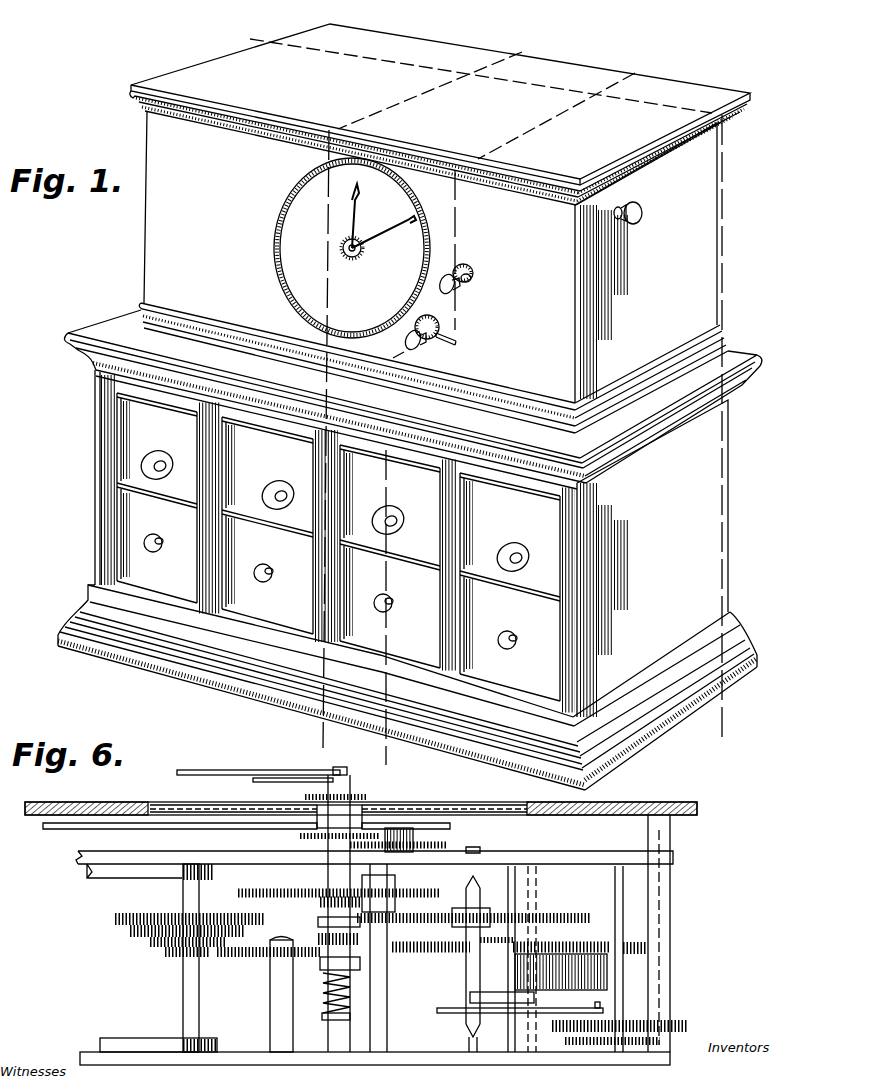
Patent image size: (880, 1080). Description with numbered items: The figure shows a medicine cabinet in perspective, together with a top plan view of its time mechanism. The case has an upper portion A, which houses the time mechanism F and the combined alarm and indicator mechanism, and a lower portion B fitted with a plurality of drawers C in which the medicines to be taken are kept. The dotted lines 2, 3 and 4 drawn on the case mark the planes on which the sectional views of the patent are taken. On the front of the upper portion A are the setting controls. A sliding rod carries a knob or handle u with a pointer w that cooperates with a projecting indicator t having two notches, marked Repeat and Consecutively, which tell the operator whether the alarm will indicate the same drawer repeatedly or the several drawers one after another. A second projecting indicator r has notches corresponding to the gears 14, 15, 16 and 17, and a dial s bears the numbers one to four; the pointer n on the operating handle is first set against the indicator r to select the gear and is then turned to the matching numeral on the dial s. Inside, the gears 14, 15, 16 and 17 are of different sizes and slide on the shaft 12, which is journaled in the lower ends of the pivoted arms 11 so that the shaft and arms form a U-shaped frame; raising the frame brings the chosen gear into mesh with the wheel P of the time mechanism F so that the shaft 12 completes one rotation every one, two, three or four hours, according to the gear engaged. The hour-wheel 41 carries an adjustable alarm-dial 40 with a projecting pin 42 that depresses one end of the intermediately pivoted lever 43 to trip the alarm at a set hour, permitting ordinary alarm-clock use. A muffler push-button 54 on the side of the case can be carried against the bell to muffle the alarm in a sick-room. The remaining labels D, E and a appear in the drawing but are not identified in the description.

In FIG. 1, the dotted section line 2 is at (635, 73).
In FIG. 1, the section line 3 is at (522, 52).
In FIG. 1, the section line 4 is at (250, 39).
In FIG. 1, the upper portion A is at (440, 228).
In FIG. 6, the upper portion A is at (571, 822).
In FIG. 1, the lower portion B is at (100, 497).
In FIG. 1, the drawers C is at (334, 591).
In FIG. 1, the drawer pull D is at (335, 510).
In FIG. 1, the dial plate E is at (282, 232).
In FIG. 6, the dial plate E is at (454, 805).
In FIG. 1, the drawer knob a is at (394, 514).
In FIG. 1, the alarm-dial 40 is at (346, 249).
In FIG. 6, the alarm-dial 40 is at (376, 798).
In FIG. 1, the muffler push-button 54 is at (643, 212).
In FIG. 1, the knob or handle u is at (446, 278).
In FIG. 1, the pointer w is at (467, 266).
In FIG. 1, the projecting indicator t is at (473, 277).
In FIG. 1, the dial s is at (441, 322).
In FIG. 1, the pointer n is at (450, 333).
In FIG. 1, the projecting indicator r is at (437, 347).
In FIG. 6, the pivoted arms 11 is at (143, 1041).
In FIG. 6, the shaft 12 is at (198, 1019).
In FIG. 6, the gear 14 is at (148, 895).
In FIG. 6, the gear 15 is at (130, 929).
In FIG. 6, the gear 16 is at (150, 941).
In FIG. 6, the gear 17 is at (176, 955).
In FIG. 6, the time mechanism F is at (174, 936).
In FIG. 6, the wheel of the time mechanism P is at (258, 958).
In FIG. 6, the hour-wheel 41 is at (290, 838).
In FIG. 6, the projecting pin 42 is at (306, 790).
In FIG. 6, the lever 43 is at (224, 836).